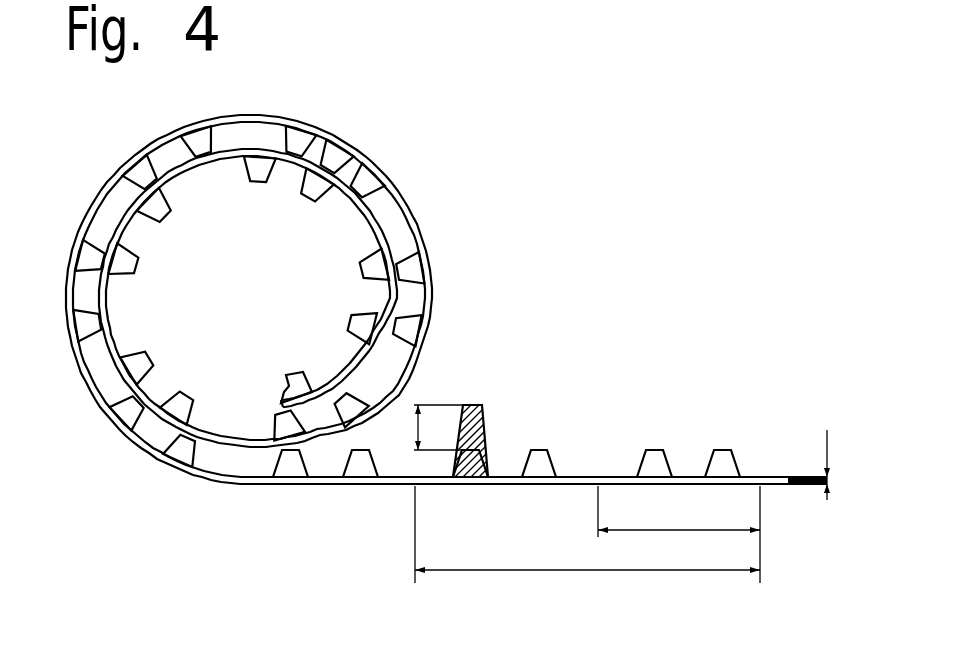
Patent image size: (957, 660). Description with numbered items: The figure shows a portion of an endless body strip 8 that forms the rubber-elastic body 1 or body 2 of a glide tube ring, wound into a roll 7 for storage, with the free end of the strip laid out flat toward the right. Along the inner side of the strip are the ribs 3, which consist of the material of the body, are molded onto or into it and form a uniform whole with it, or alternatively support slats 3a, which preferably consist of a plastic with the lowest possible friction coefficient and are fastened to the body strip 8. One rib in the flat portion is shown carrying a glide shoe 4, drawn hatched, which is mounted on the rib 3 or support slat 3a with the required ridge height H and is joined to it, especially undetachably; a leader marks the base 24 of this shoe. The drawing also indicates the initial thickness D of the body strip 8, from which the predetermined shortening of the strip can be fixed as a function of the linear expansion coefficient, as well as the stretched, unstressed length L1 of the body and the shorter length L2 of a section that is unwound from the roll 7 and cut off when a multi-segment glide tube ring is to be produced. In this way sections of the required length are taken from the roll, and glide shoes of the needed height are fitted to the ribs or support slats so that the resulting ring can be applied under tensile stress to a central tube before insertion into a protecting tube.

The rubber-elastic body 1 is at (538, 432).
The body 2 is at (538, 432).
The body strip 8 is at (585, 476).
The ribs 3 is at (432, 301).
The support slats 3a is at (488, 467).
The glide shoes 4 is at (480, 404).
The base tooth under extension 24 is at (476, 470).
The roll 7 is at (332, 249).
The ridge height H is at (436, 427).
The stretched unstressed length L1 is at (587, 534).
The segment section length L2 is at (679, 511).
The initial thickness D is at (830, 486).